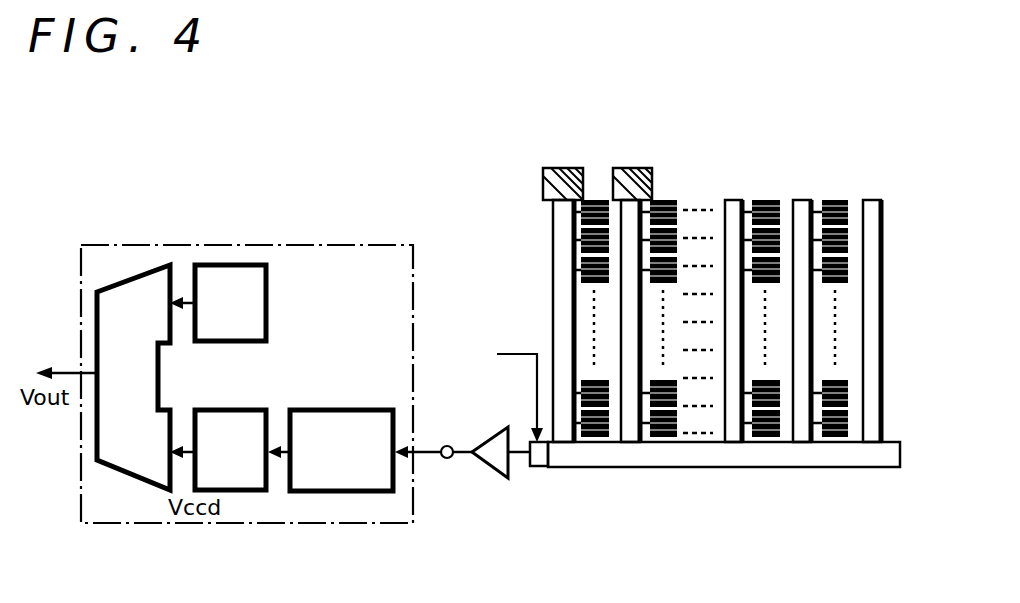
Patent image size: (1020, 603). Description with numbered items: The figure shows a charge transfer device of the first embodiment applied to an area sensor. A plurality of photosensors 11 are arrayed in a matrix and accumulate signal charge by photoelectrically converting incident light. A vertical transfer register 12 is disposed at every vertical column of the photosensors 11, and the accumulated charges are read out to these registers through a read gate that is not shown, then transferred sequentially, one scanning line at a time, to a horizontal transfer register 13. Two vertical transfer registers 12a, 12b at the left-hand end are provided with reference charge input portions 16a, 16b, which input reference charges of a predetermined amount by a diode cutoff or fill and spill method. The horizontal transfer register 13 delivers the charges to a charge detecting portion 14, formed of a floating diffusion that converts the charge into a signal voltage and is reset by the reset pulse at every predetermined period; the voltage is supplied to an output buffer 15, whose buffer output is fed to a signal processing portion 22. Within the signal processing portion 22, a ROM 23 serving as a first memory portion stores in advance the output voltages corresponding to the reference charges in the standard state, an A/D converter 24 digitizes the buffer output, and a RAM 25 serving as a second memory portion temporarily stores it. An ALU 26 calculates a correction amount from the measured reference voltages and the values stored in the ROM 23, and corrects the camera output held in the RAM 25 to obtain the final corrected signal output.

The photosensor 11 is at (753, 197).
The vertical transfer register 12 is at (723, 203).
The vertical transfer register 12a is at (560, 240).
The vertical transfer register 12b is at (632, 303).
The horizontal transfer register 13 is at (833, 455).
The charge detecting portion 14 is at (540, 466).
The output buffer 15 is at (497, 476).
The reference charge input portion 16a is at (567, 168).
The reference charge input portion 16b is at (637, 168).
The signal processing portion 22 is at (143, 244).
The ROM 23 is at (268, 283).
The A/D converter 24 is at (366, 407).
The RAM 25 is at (263, 407).
The ALU 26 is at (165, 378).